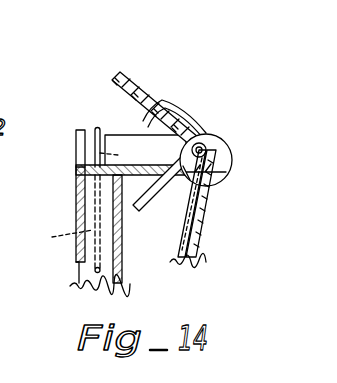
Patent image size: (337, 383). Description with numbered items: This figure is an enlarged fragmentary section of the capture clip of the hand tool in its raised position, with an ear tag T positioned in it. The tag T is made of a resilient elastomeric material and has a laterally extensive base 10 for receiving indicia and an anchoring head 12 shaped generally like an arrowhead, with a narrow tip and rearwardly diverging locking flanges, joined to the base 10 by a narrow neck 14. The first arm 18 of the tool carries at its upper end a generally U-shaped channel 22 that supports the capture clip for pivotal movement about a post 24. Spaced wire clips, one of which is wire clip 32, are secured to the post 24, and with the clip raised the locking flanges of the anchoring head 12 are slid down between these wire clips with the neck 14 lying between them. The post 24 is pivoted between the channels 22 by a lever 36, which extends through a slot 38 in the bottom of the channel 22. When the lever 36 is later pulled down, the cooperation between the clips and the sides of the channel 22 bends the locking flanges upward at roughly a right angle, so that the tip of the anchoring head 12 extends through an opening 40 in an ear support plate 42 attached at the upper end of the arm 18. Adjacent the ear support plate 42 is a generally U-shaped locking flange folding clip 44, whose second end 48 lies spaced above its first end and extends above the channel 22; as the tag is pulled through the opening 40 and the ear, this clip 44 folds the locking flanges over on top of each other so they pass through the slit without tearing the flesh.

The base 10 is at (205, 223).
The anchoring head 12 is at (127, 76).
The neck 14 is at (212, 138).
The first arm 18 is at (122, 245).
The U-shaped channel 22 is at (137, 135).
The post 24 is at (226, 160).
The wire clip 32 is at (169, 105).
The lever 36 is at (150, 193).
The slot 38 is at (224, 192).
The opening 40 is at (75, 141).
The ear support plate 42 is at (75, 192).
The locking flange folding clip 44 is at (84, 197).
The second end 48 is at (96, 127).
The ear tag T is at (220, 207).